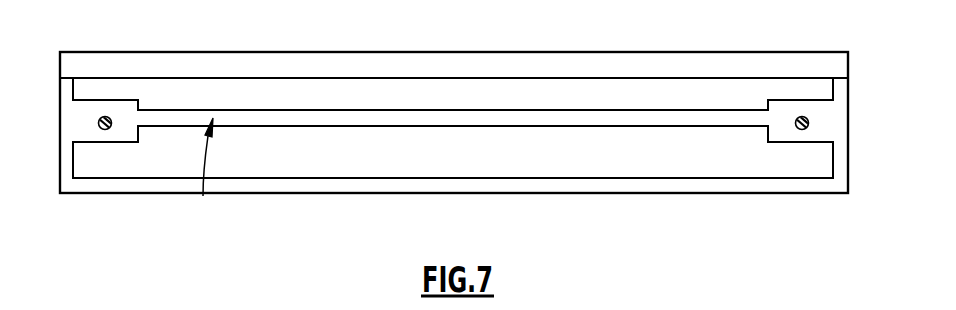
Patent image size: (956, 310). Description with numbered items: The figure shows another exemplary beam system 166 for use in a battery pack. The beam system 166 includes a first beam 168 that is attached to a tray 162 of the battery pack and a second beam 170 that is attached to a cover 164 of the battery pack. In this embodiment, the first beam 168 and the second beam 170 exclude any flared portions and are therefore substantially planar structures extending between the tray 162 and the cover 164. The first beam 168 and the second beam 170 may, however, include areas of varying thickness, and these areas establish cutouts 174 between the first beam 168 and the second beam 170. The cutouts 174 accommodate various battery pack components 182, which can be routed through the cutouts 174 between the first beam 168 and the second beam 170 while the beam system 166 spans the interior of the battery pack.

The tray 162 is at (367, 190).
The cover 164 is at (417, 51).
The beam system 166 is at (203, 196).
The first beam 168 is at (468, 150).
The second beam 170 is at (544, 97).
The cutouts 174 is at (124, 113).
The battery pack components 182 is at (99, 130).